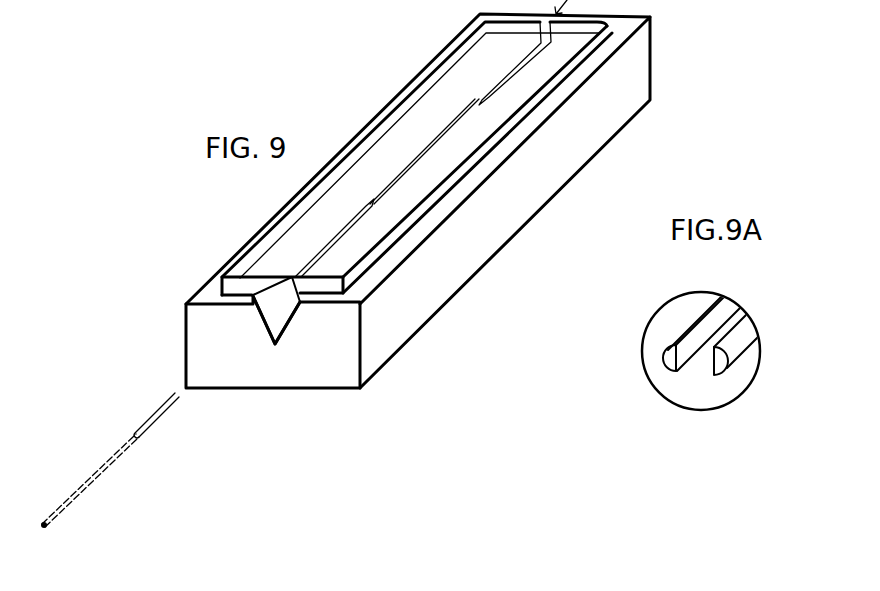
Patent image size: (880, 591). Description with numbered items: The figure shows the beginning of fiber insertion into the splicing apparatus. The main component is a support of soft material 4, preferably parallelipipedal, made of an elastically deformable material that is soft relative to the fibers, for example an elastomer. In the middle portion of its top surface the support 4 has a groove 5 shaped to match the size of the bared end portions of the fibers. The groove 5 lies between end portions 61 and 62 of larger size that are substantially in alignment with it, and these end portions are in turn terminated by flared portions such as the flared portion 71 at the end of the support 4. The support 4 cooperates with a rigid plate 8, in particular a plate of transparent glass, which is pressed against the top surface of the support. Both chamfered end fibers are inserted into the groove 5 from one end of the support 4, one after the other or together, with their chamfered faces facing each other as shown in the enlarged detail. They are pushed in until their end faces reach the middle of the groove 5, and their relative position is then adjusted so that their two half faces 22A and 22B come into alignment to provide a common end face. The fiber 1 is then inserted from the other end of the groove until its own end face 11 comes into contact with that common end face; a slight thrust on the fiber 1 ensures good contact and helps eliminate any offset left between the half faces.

In FIG. 9, the fiber 1 is at (88, 480).
In FIG. 9, the end face 11 is at (157, 414).
In FIG. 9, the support of soft material 4 is at (641, 69).
In FIG. 9, the groove 5 is at (438, 146).
In FIG. 9, the rigid plate 8 is at (378, 178).
In FIG. 9, the end portion 61 is at (343, 241).
In FIG. 9, the end portion 62 is at (518, 65).
In FIG. 9, the flared portion 71 is at (278, 322).
In FIG. 9A, the half face 22A is at (664, 360).
In FIG. 9A, the half face 22B is at (718, 367).